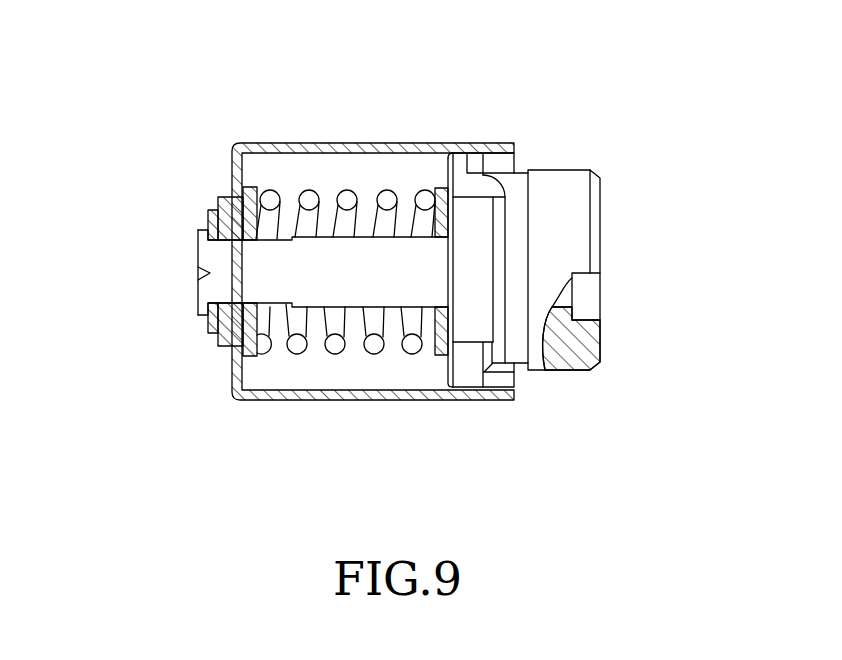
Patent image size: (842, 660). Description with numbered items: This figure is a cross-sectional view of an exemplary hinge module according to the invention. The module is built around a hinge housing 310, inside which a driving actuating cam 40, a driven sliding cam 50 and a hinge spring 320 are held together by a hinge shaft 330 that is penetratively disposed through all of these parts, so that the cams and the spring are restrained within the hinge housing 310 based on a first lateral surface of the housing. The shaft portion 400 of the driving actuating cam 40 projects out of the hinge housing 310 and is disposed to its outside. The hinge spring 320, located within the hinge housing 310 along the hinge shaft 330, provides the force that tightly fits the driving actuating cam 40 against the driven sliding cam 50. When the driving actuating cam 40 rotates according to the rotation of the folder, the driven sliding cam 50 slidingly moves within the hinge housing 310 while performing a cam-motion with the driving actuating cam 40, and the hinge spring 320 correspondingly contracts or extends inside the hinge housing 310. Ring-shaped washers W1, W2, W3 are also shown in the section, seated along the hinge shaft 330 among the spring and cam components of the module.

The driving actuating cam 40 is at (620, 160).
The driven sliding cam 50 is at (460, 163).
The hinge housing 310 is at (345, 143).
The hinge spring 320 is at (307, 197).
The hinge shaft 330 is at (213, 255).
The shaft portion 400 is at (557, 183).
The ring-shaped washer W1 is at (222, 340).
The ring-shaped washer W2 is at (257, 357).
The ring-shaped washer W3 is at (434, 356).